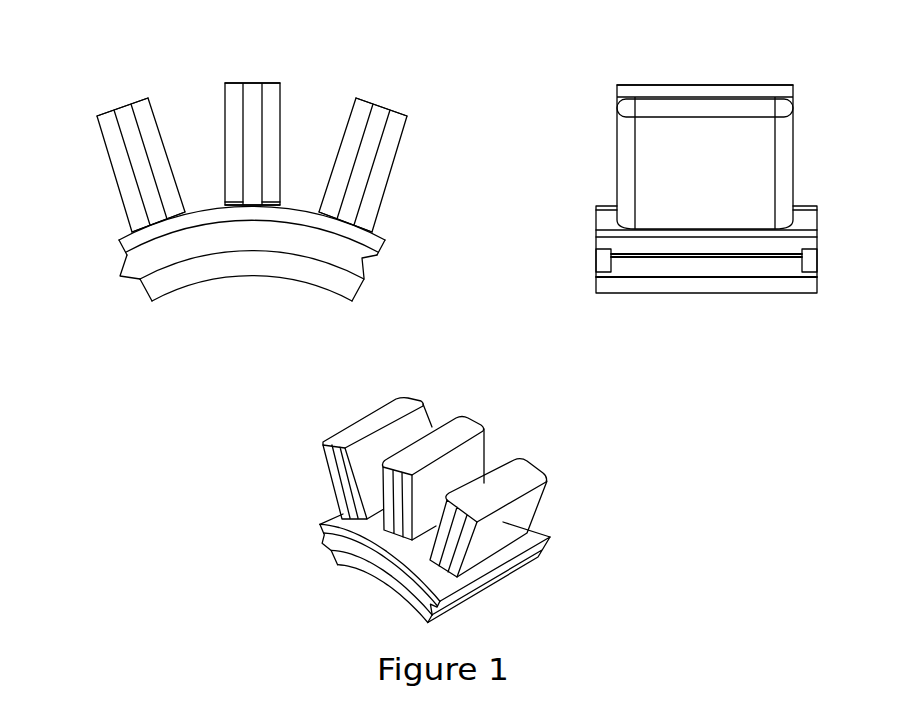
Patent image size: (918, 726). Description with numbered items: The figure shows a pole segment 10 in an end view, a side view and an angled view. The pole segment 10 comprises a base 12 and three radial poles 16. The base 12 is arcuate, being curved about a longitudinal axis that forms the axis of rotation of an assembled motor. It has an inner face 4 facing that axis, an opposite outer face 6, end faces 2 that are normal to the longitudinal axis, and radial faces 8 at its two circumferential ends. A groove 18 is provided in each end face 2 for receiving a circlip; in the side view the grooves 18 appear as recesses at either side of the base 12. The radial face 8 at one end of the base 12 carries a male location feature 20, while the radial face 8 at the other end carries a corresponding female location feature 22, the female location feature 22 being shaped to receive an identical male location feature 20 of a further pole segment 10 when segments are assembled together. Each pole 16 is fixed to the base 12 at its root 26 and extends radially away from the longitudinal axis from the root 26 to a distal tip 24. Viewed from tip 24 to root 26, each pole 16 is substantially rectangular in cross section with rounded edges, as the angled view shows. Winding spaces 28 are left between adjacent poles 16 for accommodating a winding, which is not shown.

The end face 2 is at (596, 228).
The inner face 4 is at (297, 277).
The outer face 6 is at (203, 208).
The radial face 8 is at (120, 256).
The pole segment 10 is at (398, 96).
The base 12 is at (223, 276).
The radial pole 16 is at (152, 108).
The groove 18 is at (261, 241).
The male location feature 20 is at (124, 278).
The female location feature 22 is at (368, 262).
The distal tip 24 is at (226, 83).
The root 26 is at (287, 204).
The winding space 28 is at (198, 131).